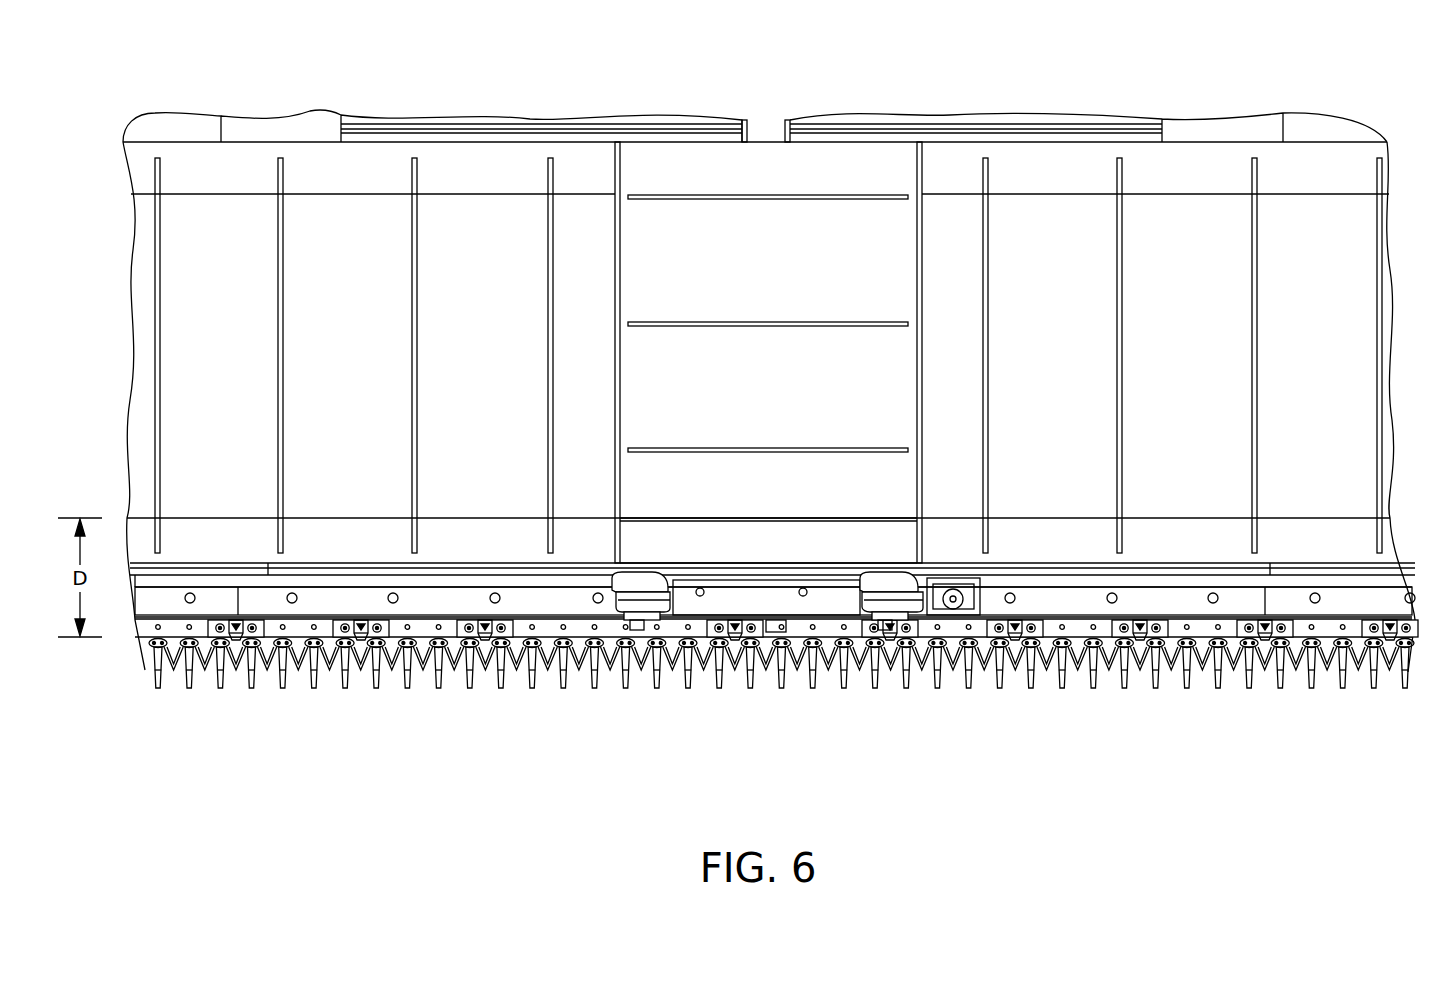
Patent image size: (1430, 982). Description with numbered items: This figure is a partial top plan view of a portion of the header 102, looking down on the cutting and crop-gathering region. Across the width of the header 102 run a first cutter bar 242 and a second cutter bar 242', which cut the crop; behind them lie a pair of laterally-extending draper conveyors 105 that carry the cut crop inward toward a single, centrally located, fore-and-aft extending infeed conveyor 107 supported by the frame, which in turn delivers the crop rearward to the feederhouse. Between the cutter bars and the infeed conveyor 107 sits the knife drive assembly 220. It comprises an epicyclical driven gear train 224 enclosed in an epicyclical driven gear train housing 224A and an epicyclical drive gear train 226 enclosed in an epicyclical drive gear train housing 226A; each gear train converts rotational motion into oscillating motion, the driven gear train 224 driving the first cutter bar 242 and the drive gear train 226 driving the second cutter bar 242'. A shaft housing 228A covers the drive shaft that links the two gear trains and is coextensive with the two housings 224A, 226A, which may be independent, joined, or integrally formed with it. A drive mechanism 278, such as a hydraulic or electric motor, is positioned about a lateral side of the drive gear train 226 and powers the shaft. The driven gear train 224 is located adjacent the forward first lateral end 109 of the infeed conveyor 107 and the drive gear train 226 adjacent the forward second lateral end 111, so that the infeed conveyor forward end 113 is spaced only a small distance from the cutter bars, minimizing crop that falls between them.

The header 102 is at (1336, 93).
The draper conveyors 105 is at (241, 373).
The infeed conveyor 107 is at (798, 279).
The forward first lateral end 109 is at (878, 518).
The forward second lateral end 111 is at (658, 518).
The infeed conveyor forward end 113 is at (830, 519).
The knife drive assembly 220 is at (693, 561).
The epicyclical driven gear train 224 is at (638, 563).
The epicyclical drive gear train 226 is at (892, 563).
The epicyclical driven gear train housing 224A is at (620, 608).
The epicyclical drive gear train housing 226A is at (868, 608).
The shaft housing 228A is at (776, 592).
The drive mechanism 278 is at (987, 630).
The first cutter bar 242 is at (460, 714).
The second cutter bar 242' is at (1097, 714).